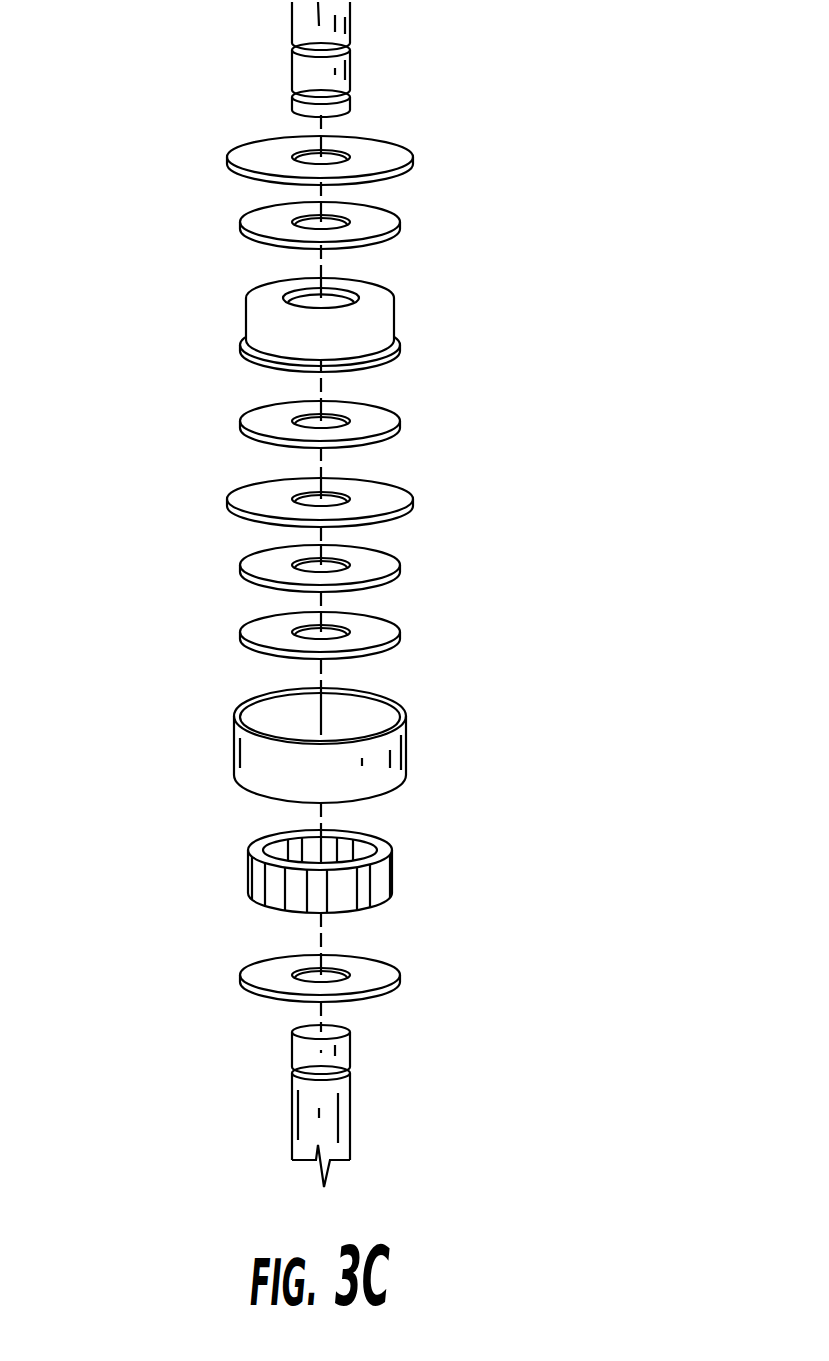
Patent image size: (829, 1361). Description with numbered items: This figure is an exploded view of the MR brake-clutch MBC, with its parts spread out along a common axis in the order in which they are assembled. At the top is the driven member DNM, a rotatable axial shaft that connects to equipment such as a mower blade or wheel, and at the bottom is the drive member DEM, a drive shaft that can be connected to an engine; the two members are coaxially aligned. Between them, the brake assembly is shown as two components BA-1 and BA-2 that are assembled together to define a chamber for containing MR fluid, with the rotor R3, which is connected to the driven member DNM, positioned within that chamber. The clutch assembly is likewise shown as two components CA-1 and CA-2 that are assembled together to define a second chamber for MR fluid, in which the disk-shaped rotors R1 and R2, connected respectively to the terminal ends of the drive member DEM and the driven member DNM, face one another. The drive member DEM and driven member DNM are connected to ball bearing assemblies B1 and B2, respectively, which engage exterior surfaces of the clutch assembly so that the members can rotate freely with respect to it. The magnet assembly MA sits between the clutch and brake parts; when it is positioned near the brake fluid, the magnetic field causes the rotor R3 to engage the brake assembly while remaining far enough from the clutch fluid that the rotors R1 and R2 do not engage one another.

The MR brake-clutch MBC is at (122, 316).
The driven member DNM is at (350, 63).
The brake assembly component BA-2 is at (413, 158).
The rotor R3 is at (400, 222).
The brake assembly component BA-1 is at (395, 306).
The ball bearing assembly B2 is at (400, 425).
The clutch assembly component CA-2 is at (413, 505).
The disk-shaped rotor R2 is at (400, 571).
The disk-shaped rotor R1 is at (400, 640).
The clutch assembly component CA-1 is at (407, 734).
The magnet assembly MA is at (393, 866).
The ball bearing assembly B1 is at (400, 976).
The drive member DEM is at (352, 1051).